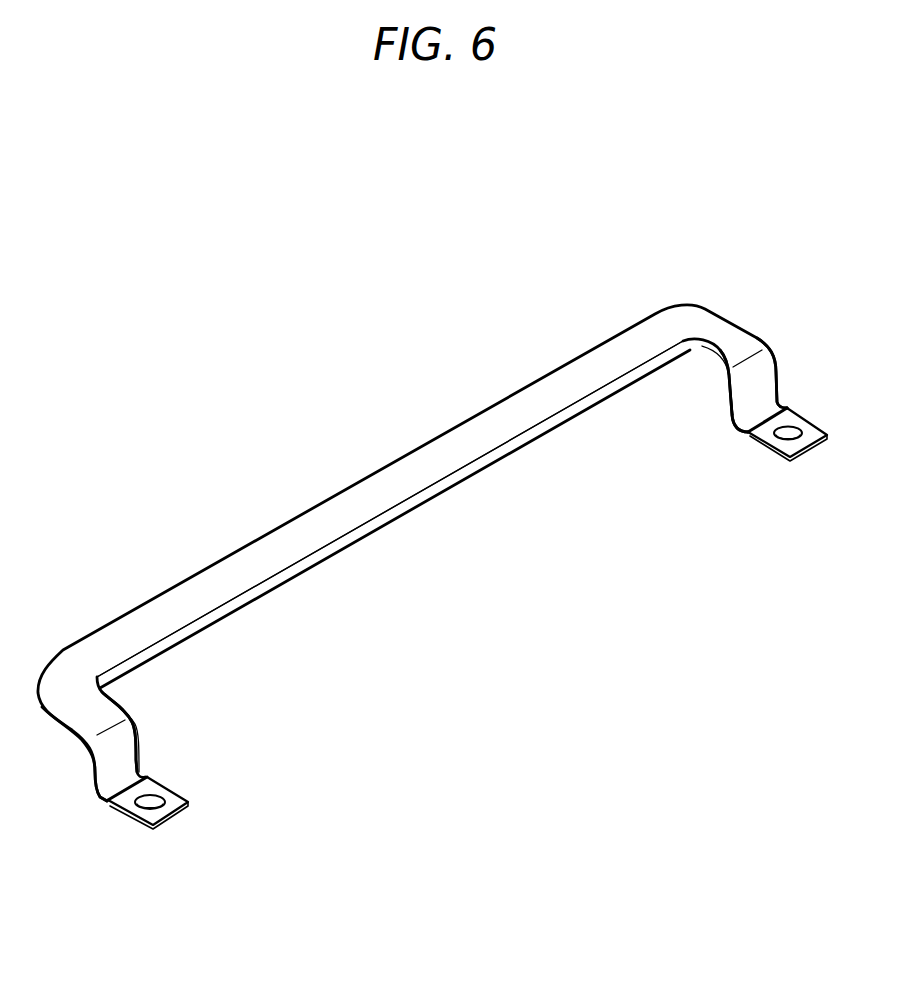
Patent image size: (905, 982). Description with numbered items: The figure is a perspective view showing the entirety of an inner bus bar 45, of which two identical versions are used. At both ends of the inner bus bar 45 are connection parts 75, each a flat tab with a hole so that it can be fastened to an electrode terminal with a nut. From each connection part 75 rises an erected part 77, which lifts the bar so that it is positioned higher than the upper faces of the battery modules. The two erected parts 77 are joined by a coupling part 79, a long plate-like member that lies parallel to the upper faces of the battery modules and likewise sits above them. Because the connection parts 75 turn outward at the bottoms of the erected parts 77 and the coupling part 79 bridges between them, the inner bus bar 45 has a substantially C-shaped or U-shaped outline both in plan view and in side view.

The inner bus bar 45 is at (450, 511).
The connection part 75 is at (168, 786).
The erected part 77 is at (105, 763).
The coupling part 79 is at (278, 583).